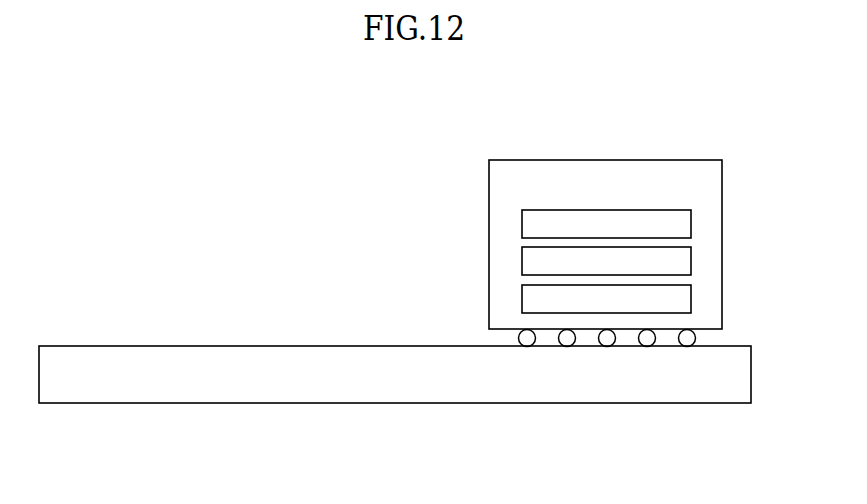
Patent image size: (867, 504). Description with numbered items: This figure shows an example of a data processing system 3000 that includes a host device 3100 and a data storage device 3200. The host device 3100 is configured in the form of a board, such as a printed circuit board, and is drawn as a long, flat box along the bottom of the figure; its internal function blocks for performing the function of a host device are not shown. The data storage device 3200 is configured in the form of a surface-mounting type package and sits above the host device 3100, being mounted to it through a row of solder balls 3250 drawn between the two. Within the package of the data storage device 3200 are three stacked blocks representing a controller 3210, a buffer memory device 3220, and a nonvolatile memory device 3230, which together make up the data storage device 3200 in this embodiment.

The data processing system 3000 is at (100, 100).
The host device 3100 is at (395, 374).
The data storage device 3200 is at (605, 244).
The controller 3210 is at (606, 223).
The buffer memory device 3220 is at (606, 261).
The nonvolatile memory device 3230 is at (606, 298).
The solder balls 3250 is at (708, 339).